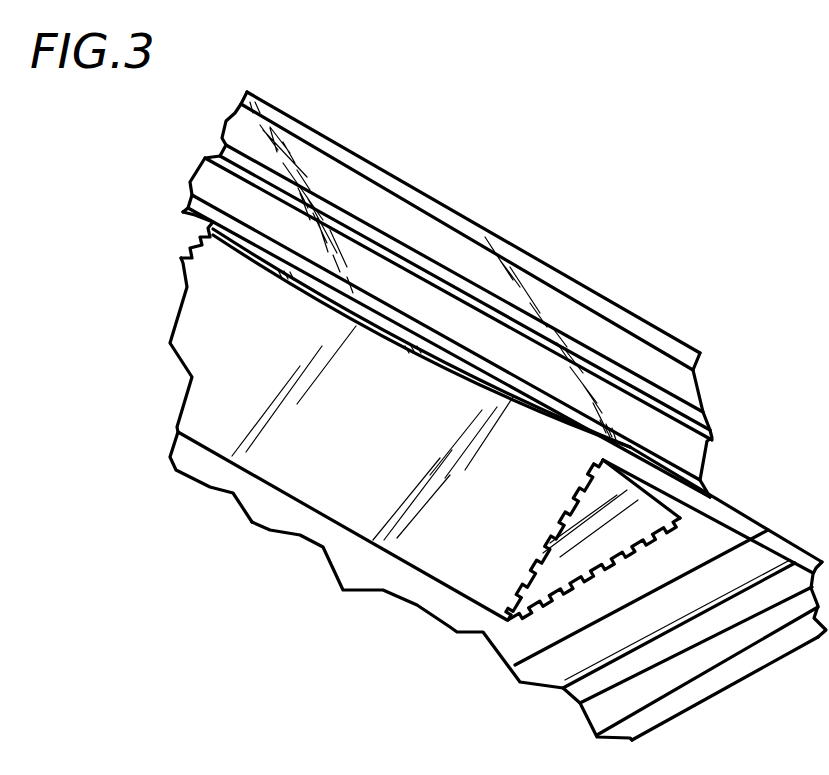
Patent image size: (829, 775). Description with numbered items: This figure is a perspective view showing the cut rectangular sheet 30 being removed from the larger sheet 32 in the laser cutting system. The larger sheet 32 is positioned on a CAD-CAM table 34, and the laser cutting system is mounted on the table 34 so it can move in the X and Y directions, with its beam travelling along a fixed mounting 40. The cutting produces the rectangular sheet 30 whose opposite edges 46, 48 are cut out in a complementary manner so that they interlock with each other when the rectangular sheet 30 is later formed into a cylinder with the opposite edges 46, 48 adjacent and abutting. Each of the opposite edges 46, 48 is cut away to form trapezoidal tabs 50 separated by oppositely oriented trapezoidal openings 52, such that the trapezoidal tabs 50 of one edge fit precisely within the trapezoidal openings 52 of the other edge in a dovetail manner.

The rectangular sheet 30 is at (210, 400).
The larger sheet 32 is at (288, 521).
The CAD-CAM table 34 is at (583, 698).
The fixed mounting 40 is at (337, 185).
The opposite edge 46 is at (182, 260).
The opposite edge 48 is at (628, 446).
The trapezoidal tabs 50 is at (180, 227).
The trapezoidal openings 52 is at (193, 260).